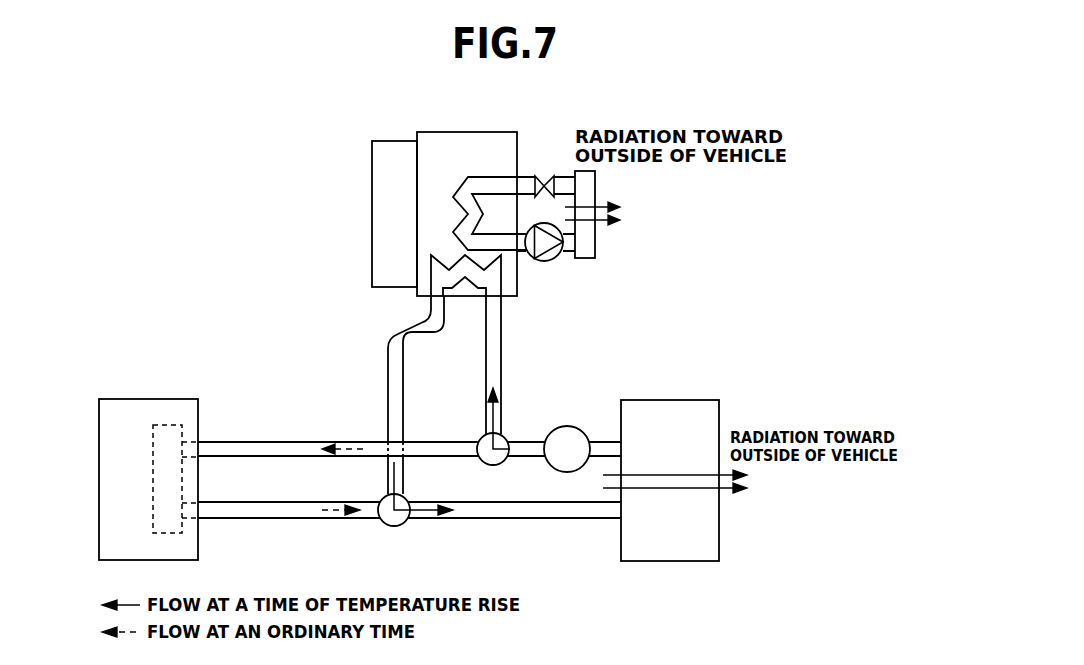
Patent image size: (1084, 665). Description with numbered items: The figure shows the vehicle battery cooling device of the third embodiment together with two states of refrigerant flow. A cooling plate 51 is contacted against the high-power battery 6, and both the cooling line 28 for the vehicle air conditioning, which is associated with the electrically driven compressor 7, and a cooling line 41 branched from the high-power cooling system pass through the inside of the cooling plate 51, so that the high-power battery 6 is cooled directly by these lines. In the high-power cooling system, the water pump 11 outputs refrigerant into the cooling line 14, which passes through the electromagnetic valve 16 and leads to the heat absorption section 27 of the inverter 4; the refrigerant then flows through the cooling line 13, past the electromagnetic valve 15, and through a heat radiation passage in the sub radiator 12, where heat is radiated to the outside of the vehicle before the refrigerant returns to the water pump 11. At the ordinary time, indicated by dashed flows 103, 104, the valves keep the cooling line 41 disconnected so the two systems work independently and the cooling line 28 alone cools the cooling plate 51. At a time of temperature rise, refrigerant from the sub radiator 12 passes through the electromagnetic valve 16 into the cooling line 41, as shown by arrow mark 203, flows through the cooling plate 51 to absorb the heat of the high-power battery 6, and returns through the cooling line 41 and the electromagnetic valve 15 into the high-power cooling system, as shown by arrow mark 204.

The inverter 4 is at (143, 399).
The high-power battery 6 is at (372, 195).
The electrically driven compressor 7 is at (546, 262).
The water pump 11 is at (568, 426).
The sub radiator 12 is at (671, 561).
The cooling line 13 is at (248, 518).
The cooling line 14 is at (247, 442).
The electromagnetic valve 15 is at (397, 527).
The electromagnetic valve 16 is at (505, 436).
The heat absorption section 27 is at (171, 425).
The cooling line for vehicle air conditioning 28 is at (545, 162).
The cooling line 41 is at (388, 378).
The cooling plate 51 is at (468, 132).
The flow 103 is at (345, 453).
The flow 104 is at (335, 518).
The arrow mark 203 is at (486, 418).
The arrow mark 204 is at (394, 482).